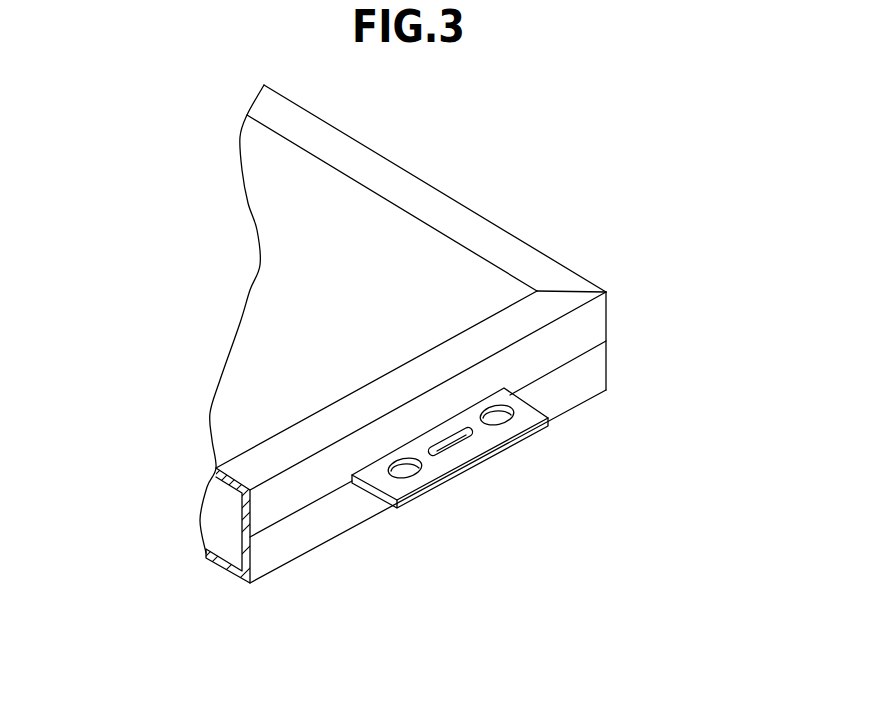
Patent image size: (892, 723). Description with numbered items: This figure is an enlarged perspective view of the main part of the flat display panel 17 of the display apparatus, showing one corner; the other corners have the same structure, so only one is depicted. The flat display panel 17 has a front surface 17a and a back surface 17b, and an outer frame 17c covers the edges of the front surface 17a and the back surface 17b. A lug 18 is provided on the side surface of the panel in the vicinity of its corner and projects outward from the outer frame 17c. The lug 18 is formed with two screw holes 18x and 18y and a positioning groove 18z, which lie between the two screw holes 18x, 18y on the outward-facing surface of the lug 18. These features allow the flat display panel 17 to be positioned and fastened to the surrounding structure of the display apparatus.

The flat display panel 17 is at (374, 353).
The front surface 17a is at (320, 547).
The back surface 17b is at (270, 337).
The outer frame 17c is at (250, 470).
The lug 18 is at (484, 474).
The screw hole 18x is at (407, 475).
The screw hole 18y is at (500, 420).
The positioning groove 18z is at (457, 445).